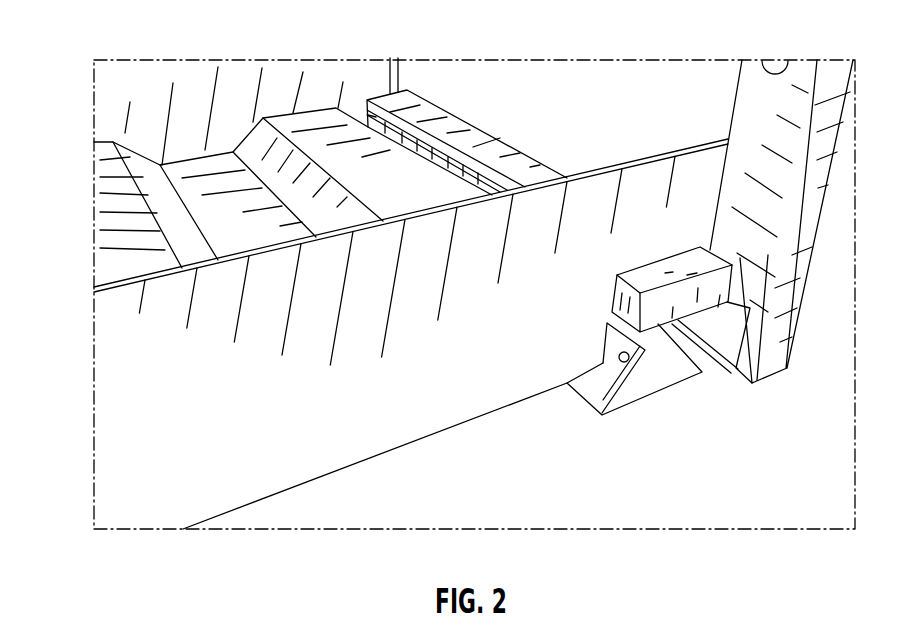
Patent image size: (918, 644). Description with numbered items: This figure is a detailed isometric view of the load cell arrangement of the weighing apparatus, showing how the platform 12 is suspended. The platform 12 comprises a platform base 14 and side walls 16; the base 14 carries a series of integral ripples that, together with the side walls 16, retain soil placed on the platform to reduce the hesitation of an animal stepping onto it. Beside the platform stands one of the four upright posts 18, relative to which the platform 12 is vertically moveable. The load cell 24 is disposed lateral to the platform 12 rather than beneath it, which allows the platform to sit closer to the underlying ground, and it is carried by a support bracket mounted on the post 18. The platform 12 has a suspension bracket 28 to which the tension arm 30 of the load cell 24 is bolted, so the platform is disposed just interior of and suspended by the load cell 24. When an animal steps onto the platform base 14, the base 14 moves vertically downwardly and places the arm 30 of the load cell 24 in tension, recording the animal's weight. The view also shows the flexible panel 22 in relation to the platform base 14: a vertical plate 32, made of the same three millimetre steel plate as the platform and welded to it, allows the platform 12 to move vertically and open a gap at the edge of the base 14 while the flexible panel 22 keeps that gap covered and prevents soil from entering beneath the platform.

The platform 12 is at (524, 485).
The platform base 14 is at (125, 222).
The side walls 16 is at (163, 75).
The upright post 18 is at (750, 77).
The flexible panel 22 is at (493, 139).
The load cell 24 is at (607, 323).
The suspension bracket 28 is at (648, 387).
The tension arm 30 is at (657, 337).
The vertical plate 32 is at (372, 117).